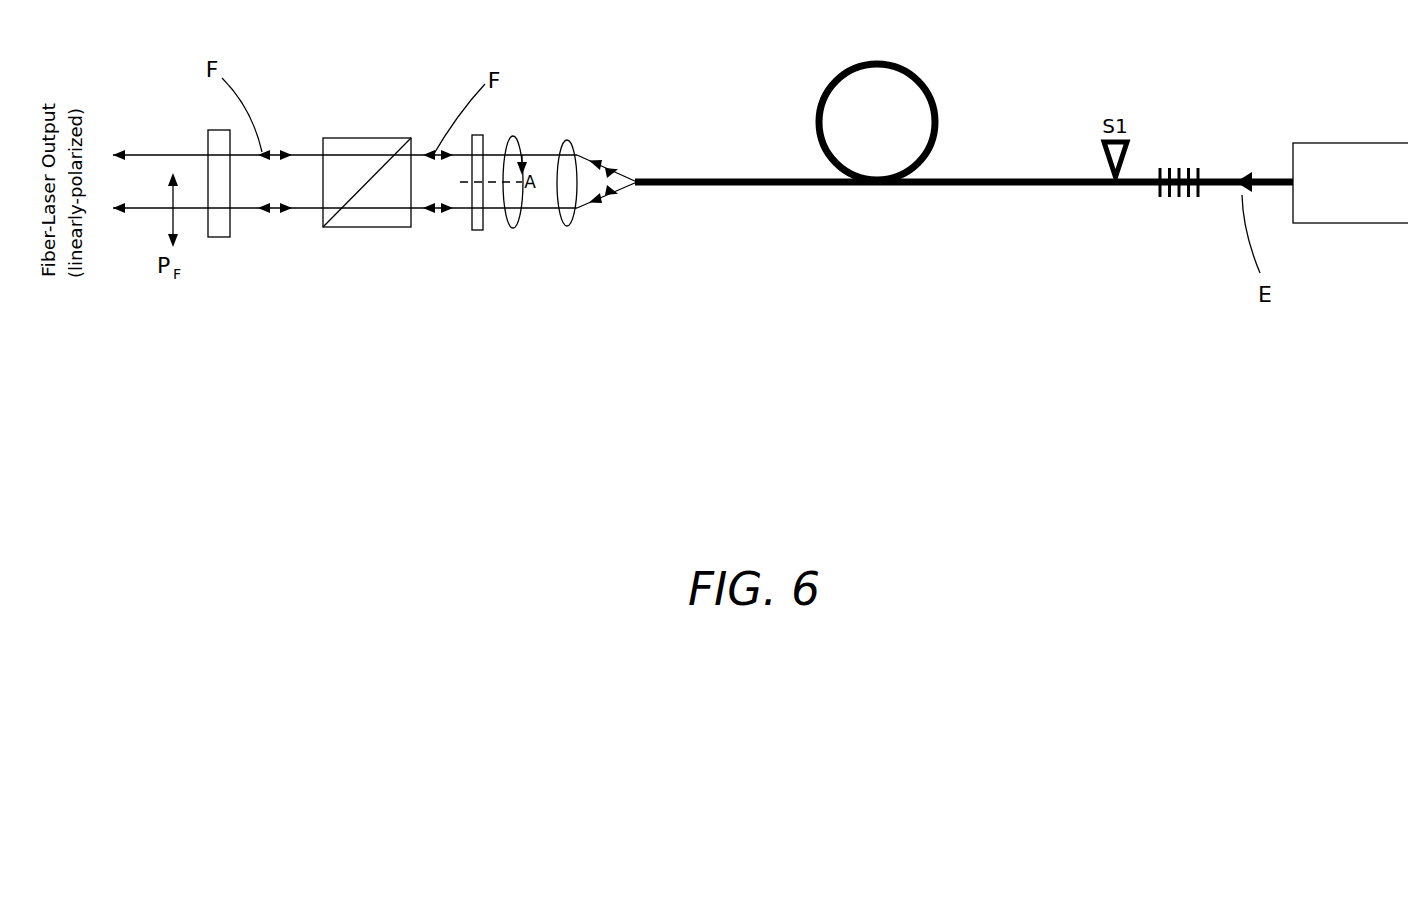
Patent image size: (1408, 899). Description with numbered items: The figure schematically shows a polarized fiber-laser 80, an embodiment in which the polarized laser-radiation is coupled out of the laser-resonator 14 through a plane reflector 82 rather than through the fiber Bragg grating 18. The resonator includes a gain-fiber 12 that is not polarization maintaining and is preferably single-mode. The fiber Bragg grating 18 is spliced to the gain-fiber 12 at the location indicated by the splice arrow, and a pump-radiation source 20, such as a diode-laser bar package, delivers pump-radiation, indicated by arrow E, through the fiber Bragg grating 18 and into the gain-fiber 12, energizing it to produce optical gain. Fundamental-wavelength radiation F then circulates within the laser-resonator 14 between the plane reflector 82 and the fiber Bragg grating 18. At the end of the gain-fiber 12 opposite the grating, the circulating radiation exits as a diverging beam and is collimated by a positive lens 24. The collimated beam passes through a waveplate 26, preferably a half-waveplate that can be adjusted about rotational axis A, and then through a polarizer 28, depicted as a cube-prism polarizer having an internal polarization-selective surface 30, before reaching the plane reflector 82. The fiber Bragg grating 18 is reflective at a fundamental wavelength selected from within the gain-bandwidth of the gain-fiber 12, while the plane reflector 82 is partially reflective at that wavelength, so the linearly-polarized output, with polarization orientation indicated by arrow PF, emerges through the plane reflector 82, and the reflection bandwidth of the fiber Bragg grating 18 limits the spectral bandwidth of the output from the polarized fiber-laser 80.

The gain-fiber 12 is at (766, 193).
The laser-resonator 14 is at (286, 193).
The fiber Bragg grating 18 is at (1171, 207).
The pump-radiation source 20 is at (1349, 232).
The positive lens 24 is at (568, 142).
The waveplate 26 is at (478, 232).
The polarizer 28 is at (377, 128).
The internal polarization-selective surface 30 is at (358, 185).
The polarized fiber-laser 80 is at (953, 389).
The plane reflector 82 is at (238, 230).